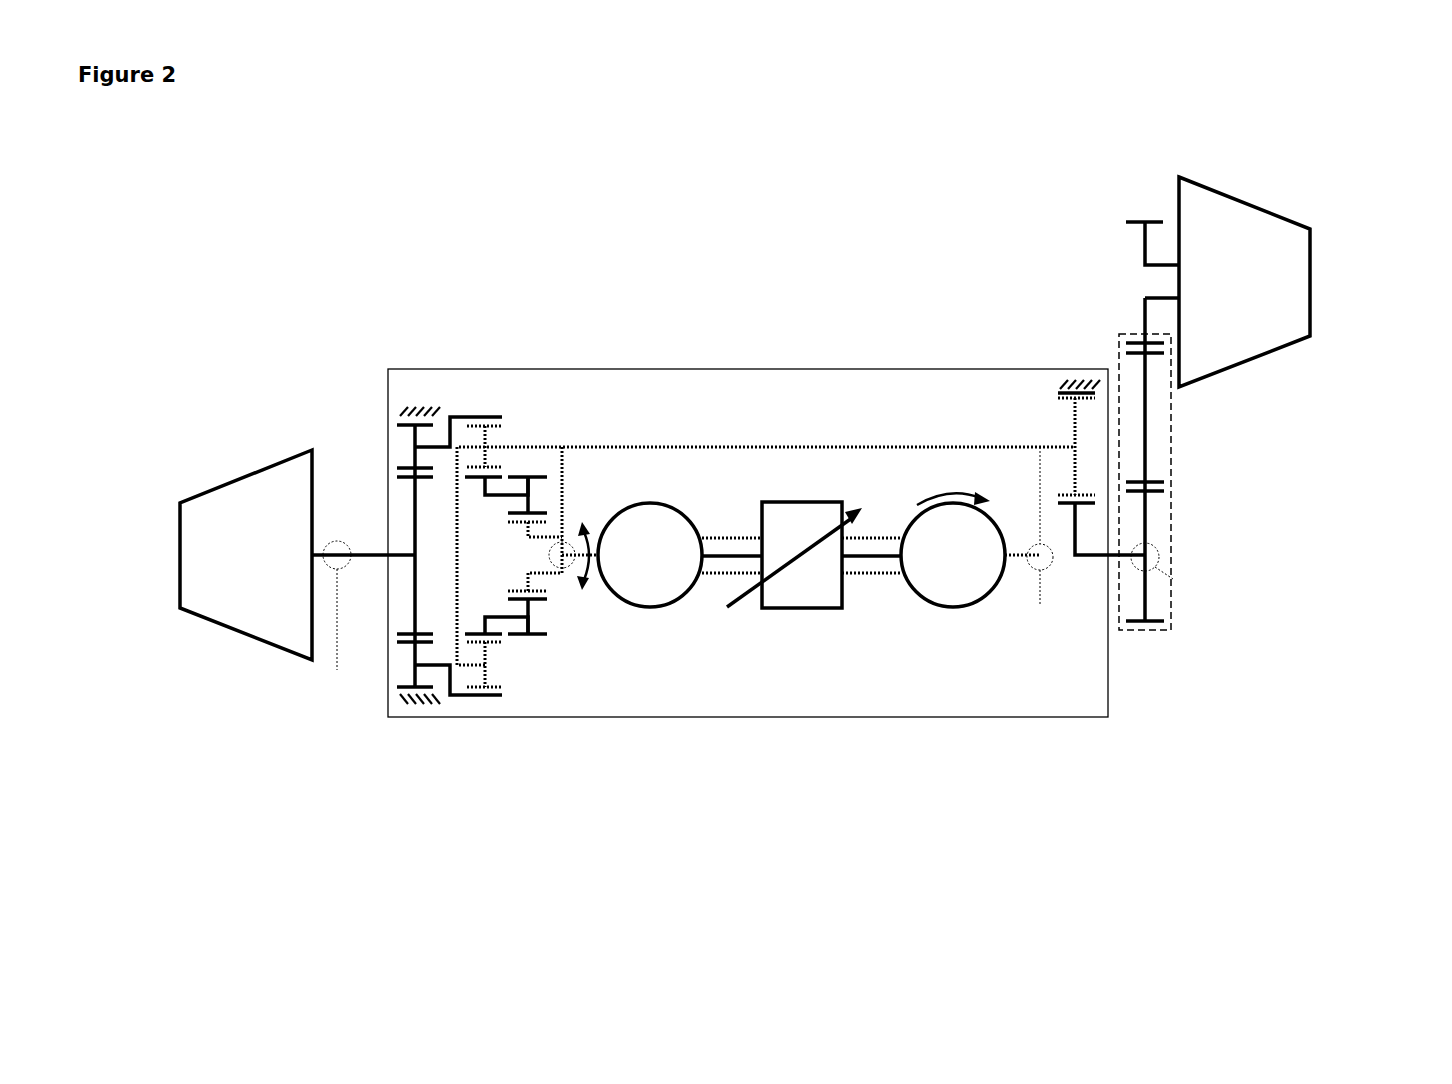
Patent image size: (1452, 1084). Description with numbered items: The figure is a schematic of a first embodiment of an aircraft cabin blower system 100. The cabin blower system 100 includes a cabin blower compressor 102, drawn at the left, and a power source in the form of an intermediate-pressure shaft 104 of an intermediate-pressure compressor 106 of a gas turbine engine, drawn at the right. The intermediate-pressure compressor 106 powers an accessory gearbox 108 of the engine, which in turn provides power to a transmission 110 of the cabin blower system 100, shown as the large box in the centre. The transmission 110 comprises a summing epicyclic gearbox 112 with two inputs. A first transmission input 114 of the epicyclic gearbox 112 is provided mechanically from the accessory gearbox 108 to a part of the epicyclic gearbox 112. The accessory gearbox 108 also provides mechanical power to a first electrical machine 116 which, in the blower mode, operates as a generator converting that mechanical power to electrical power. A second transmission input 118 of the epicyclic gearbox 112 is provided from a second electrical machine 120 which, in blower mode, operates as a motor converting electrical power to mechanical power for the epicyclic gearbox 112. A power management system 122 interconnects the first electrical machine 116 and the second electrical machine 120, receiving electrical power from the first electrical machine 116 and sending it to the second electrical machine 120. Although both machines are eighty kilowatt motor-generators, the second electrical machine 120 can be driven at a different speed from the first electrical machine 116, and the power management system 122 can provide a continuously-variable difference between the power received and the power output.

The aircraft cabin blower system 100 is at (368, 148).
The cabin blower compressor 102 is at (243, 472).
The intermediate-pressure shaft 104 is at (1145, 297).
The intermediate-pressure compressor 106 is at (1265, 210).
The accessory gearbox 108 is at (1165, 461).
The transmission 110 is at (518, 345).
The summing epicyclic gearbox 112 is at (496, 684).
The first transmission input 114 is at (527, 443).
The second transmission input 118 is at (584, 590).
The second electrical machine 120 is at (661, 503).
The power management system 122 is at (806, 606).
The first electrical machine 116 is at (946, 503).